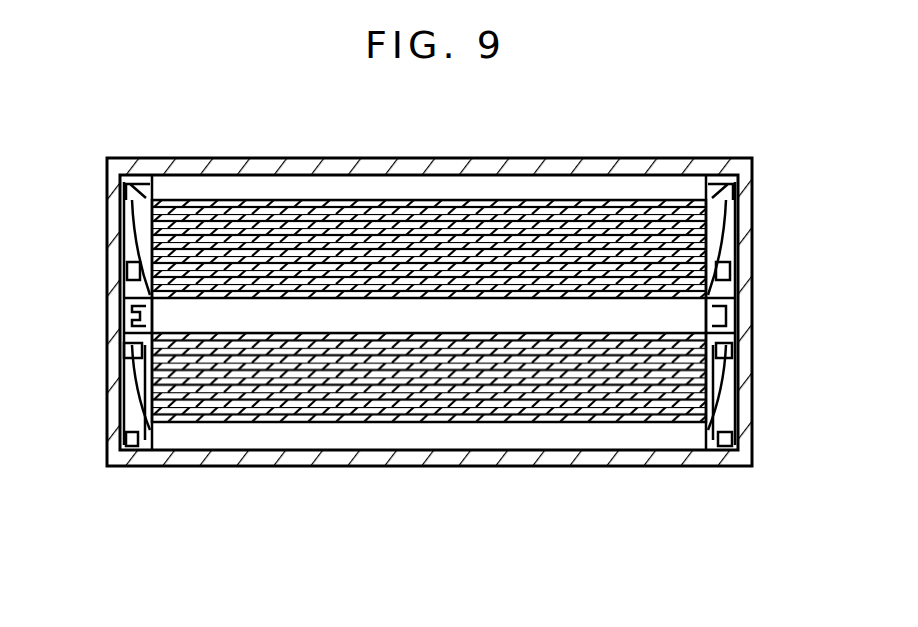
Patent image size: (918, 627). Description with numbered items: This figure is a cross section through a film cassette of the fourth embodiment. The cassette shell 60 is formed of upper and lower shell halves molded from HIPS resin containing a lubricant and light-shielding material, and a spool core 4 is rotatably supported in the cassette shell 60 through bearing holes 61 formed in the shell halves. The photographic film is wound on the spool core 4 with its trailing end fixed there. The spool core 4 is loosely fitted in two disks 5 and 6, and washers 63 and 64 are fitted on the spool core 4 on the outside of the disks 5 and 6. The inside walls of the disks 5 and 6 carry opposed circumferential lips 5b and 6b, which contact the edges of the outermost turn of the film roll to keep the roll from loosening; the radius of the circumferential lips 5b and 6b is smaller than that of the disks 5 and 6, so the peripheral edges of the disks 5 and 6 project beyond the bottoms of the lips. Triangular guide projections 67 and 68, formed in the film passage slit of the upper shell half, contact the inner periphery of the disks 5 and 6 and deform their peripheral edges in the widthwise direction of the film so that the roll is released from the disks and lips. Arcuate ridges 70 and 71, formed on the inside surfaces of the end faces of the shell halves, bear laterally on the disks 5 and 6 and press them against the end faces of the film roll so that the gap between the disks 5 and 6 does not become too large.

The cassette shell 60 is at (332, 495).
The spool core 4 is at (755, 323).
The disk 5 is at (124, 390).
The circumferential lip 5b is at (170, 445).
The disk 6 is at (745, 240).
The circumferential lip 6b is at (700, 455).
The bearing hole 61 is at (755, 308).
The washer 63 is at (128, 352).
The washer 64 is at (752, 375).
The triangular guide projection 67 is at (152, 190).
The triangular guide projection 68 is at (717, 188).
The arcuate ridge 70 is at (134, 447).
The arcuate ridge 71 is at (724, 456).